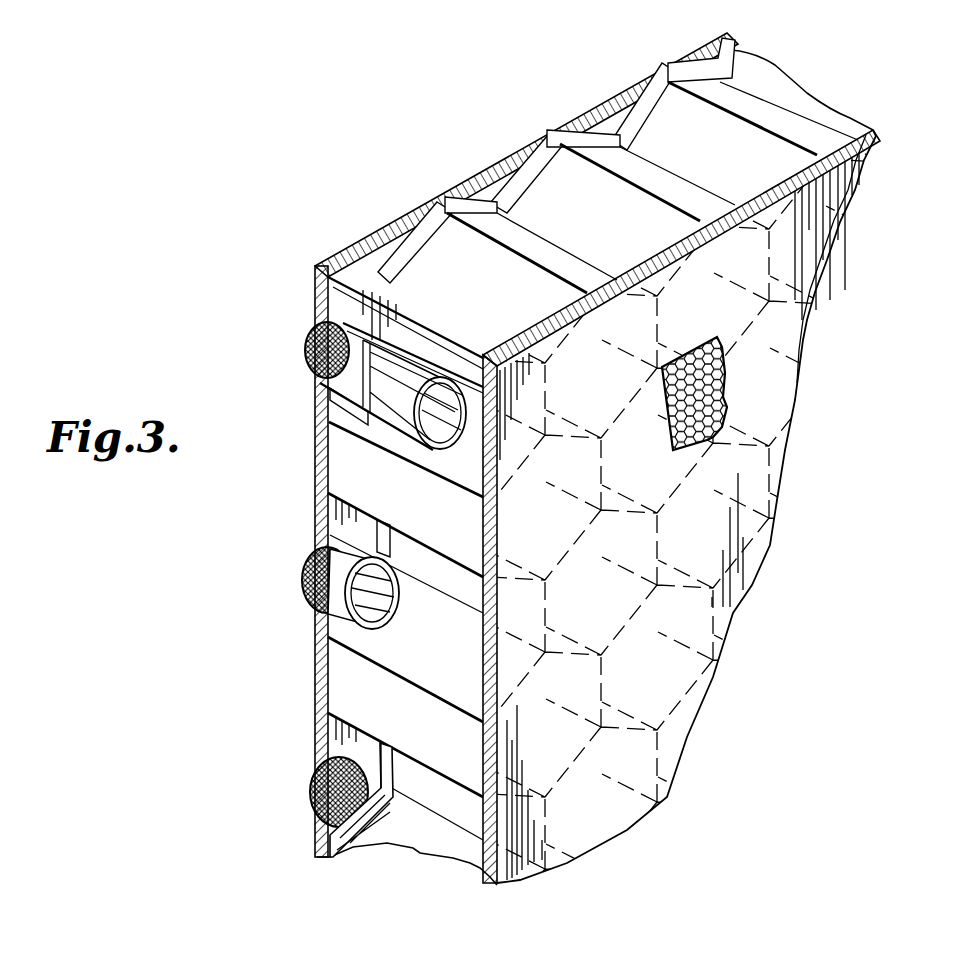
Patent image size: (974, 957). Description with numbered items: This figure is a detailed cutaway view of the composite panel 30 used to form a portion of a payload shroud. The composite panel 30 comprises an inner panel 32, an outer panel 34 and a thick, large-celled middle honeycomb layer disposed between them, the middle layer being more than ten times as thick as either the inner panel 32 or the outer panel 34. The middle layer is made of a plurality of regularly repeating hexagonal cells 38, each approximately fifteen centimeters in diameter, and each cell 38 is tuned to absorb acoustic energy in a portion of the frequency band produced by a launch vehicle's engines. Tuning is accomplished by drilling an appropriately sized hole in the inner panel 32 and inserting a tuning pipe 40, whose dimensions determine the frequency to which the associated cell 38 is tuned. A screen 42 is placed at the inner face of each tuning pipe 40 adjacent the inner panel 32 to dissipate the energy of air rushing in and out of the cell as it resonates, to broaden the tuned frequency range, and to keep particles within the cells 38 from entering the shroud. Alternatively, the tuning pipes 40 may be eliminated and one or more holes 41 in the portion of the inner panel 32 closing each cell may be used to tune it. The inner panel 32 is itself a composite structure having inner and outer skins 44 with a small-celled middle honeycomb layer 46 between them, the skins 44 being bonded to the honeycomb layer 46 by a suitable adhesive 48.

The composite panel 30 is at (284, 116).
The inner panel 32 is at (306, 275).
The outer panel 34 is at (805, 334).
The cells 38 is at (545, 178).
The tuning pipe 40 is at (320, 387).
The holes 41 is at (315, 823).
The screen 42 is at (318, 345).
The inner and outer skins 44 is at (662, 76).
The small-celled middle honeycomb layer 46 is at (418, 203).
The adhesive 48 is at (470, 205).